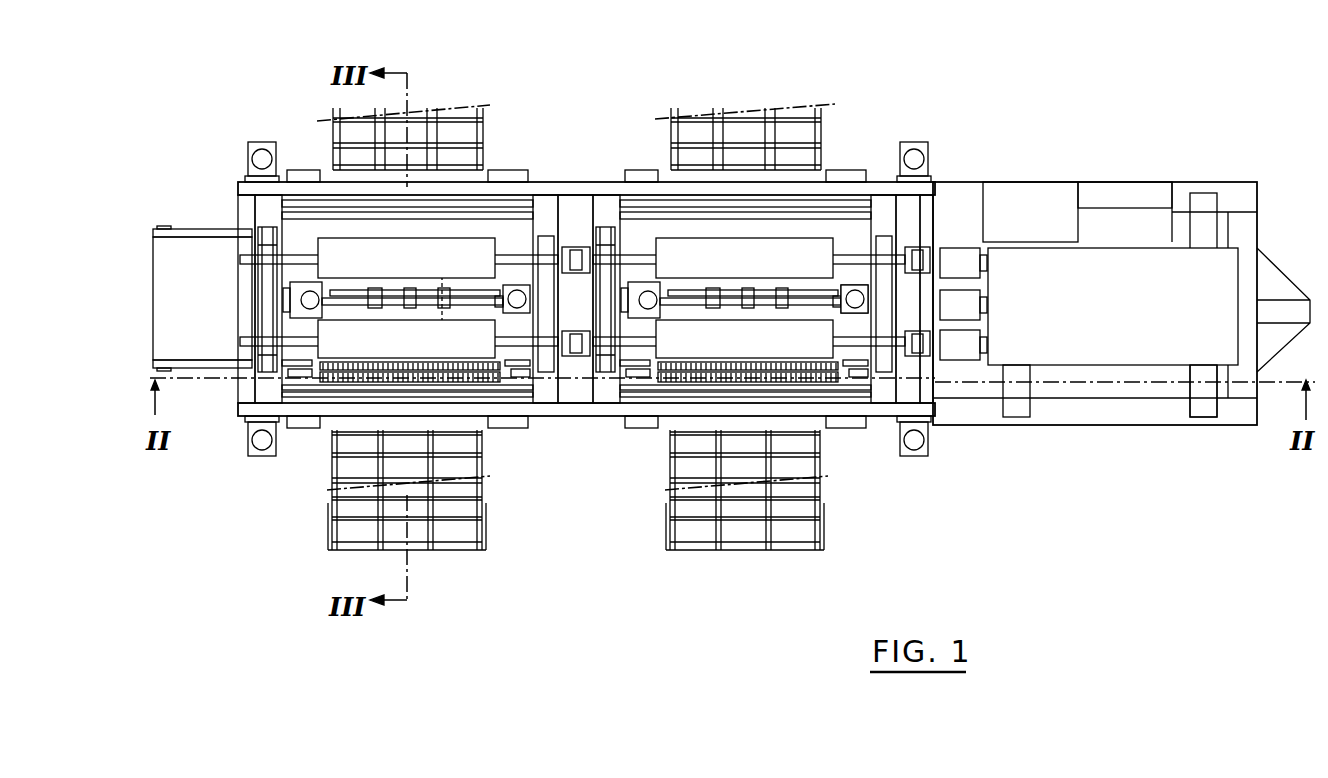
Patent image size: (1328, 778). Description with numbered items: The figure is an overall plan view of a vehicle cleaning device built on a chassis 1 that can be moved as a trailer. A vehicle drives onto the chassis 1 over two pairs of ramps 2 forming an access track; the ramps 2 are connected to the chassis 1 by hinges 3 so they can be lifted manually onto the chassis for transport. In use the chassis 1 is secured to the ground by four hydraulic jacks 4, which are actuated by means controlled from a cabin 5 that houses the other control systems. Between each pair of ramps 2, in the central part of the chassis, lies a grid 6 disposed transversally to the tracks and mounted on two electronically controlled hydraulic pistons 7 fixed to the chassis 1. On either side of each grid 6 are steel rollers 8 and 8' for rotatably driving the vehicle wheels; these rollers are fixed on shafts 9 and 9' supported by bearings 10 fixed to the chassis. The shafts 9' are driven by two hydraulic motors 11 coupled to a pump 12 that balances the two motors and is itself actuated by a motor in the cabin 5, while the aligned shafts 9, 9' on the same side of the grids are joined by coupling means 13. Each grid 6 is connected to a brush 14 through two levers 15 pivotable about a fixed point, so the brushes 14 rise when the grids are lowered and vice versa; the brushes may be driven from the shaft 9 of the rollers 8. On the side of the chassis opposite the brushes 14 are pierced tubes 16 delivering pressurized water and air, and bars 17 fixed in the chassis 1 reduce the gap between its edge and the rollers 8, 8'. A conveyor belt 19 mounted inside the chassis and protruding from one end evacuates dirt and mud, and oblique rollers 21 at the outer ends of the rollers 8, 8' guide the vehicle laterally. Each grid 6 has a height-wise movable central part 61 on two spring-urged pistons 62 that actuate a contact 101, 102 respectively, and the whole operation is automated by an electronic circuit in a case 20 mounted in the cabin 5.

The chassis 1 is at (596, 414).
The ramps 2 is at (482, 138).
The hinges 3 is at (507, 430).
The hydraulic jacks 4 is at (252, 143).
The cabin 5 is at (1121, 303).
The grid 6 is at (397, 318).
The hydraulic pistons 7 is at (288, 300).
The steel rollers 8 is at (406, 301).
The steel rollers 8' is at (744, 298).
The shafts 9 is at (399, 281).
The shafts 9' is at (749, 283).
The bearings 10 is at (265, 283).
The hydraulic motors 11 is at (963, 304).
The pump 12 is at (963, 305).
The coupling means 13 is at (570, 260).
The brush 14 is at (331, 381).
The levers 15 is at (313, 367).
The pierced tubes 16 is at (255, 190).
The bars 17 is at (493, 212).
The conveyor belt 19 is at (202, 298).
The case 20 is at (1022, 192).
The oblique rollers 21 is at (822, 318).
The central part 61 is at (478, 300).
The spring-urged pistons 62 is at (384, 272).
The contact 101 is at (406, 290).
The contact 102 is at (747, 296).